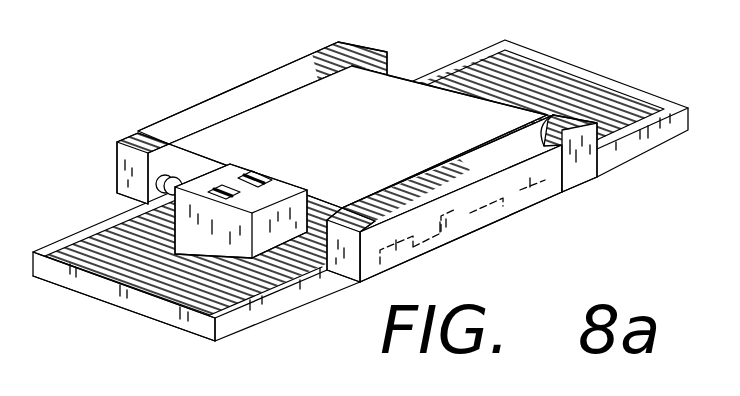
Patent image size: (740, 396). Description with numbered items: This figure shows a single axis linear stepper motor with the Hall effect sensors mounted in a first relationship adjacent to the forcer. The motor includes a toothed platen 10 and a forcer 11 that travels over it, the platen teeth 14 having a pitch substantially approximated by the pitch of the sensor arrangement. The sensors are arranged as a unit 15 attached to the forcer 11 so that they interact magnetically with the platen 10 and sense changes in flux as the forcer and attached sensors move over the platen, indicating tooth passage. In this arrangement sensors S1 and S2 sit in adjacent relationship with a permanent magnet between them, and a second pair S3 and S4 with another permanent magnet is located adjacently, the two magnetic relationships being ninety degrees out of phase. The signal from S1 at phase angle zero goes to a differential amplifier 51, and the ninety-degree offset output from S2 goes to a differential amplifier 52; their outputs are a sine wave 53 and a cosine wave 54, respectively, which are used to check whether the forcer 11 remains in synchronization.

The platen 10 is at (107, 224).
The forcer 11 is at (444, 139).
The platen teeth 14 is at (548, 72).
The unit 15 is at (211, 171).
The differential amplifier 51 is at (134, 132).
The differential amplifier 52 is at (218, 190).
The sine wave 53 is at (248, 178).
The cosine wave 54 is at (262, 174).